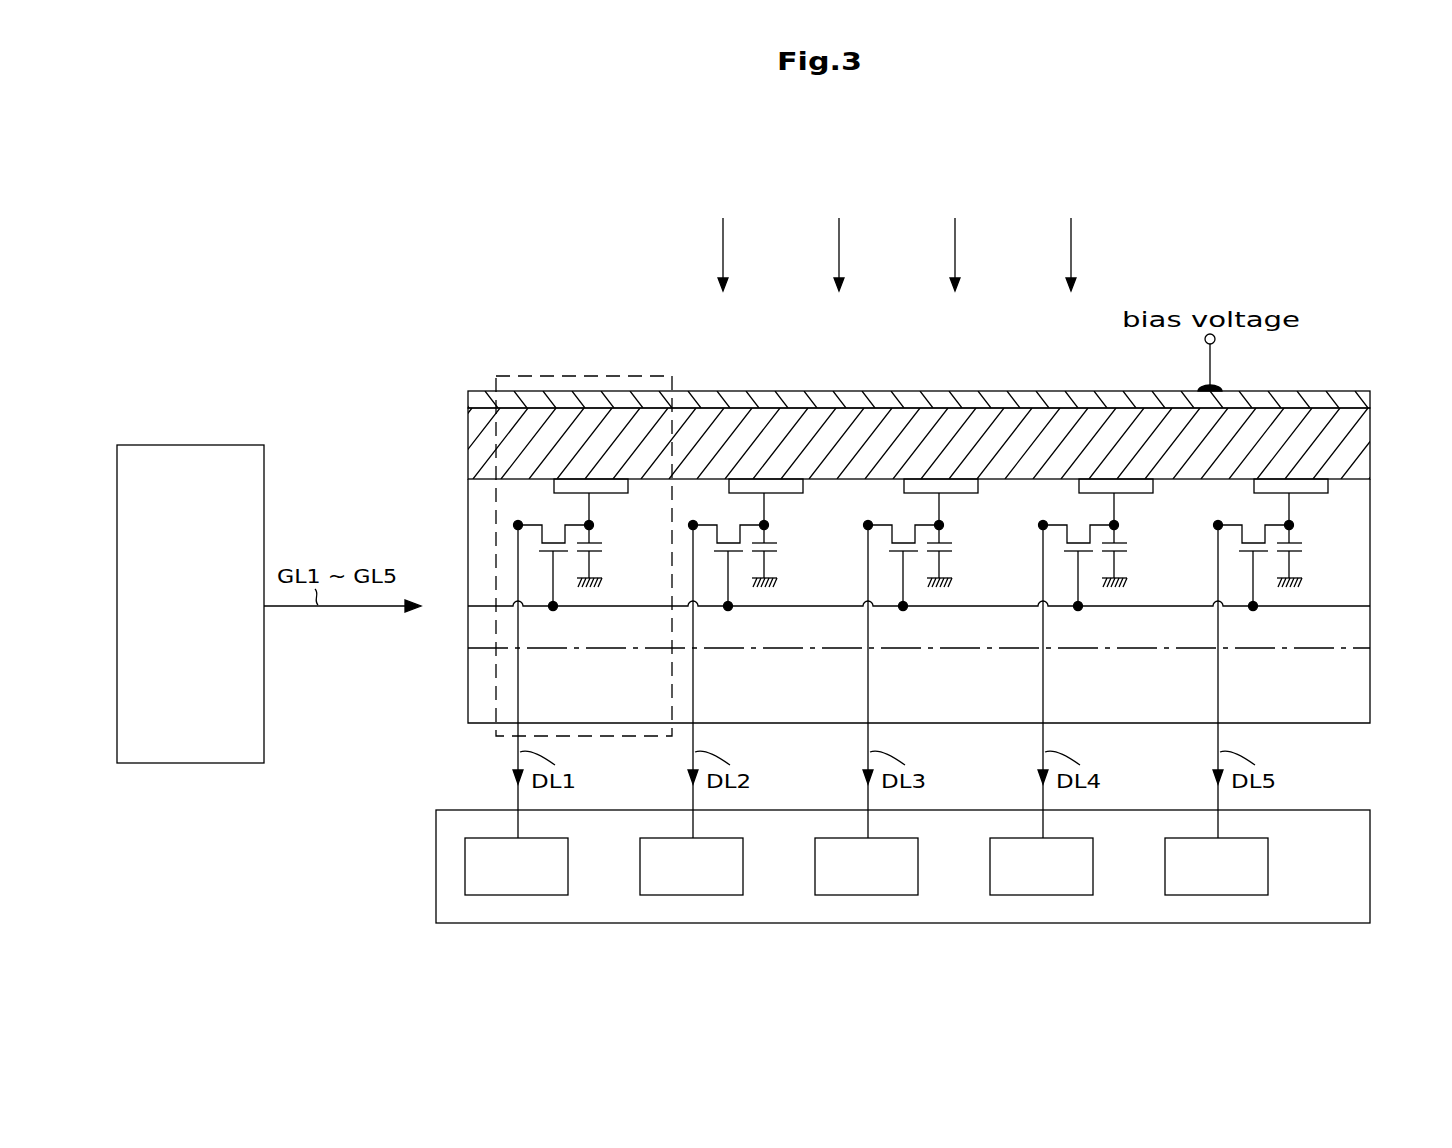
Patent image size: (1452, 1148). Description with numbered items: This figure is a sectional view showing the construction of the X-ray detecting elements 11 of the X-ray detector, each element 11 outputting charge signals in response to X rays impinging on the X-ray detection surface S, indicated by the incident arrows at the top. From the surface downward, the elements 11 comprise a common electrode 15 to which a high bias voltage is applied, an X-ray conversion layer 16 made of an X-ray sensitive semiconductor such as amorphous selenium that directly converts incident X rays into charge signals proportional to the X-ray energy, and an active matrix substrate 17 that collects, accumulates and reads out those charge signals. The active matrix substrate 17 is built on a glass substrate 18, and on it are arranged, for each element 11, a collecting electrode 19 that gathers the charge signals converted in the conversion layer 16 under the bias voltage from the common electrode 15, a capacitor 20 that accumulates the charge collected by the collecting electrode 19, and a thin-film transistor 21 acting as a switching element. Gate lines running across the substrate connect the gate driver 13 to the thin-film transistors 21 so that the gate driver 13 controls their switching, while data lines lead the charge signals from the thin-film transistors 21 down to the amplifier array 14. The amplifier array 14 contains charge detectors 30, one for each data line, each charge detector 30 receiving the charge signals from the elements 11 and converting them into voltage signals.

The X-ray detecting element 11 is at (583, 375).
The gate driver 13 is at (190, 765).
The amplifier array 14 is at (798, 866).
The common electrode 15 is at (1372, 400).
The X-ray conversion layer 16 is at (1355, 447).
The active matrix substrate 17 is at (930, 601).
The glass substrate 18 is at (466, 648).
The collecting electrode 19 is at (612, 494).
The capacitor 20 is at (603, 554).
The thin-film transistor 21 is at (533, 548).
The charge detector 30 is at (465, 868).
The X-ray detection surface S is at (815, 391).